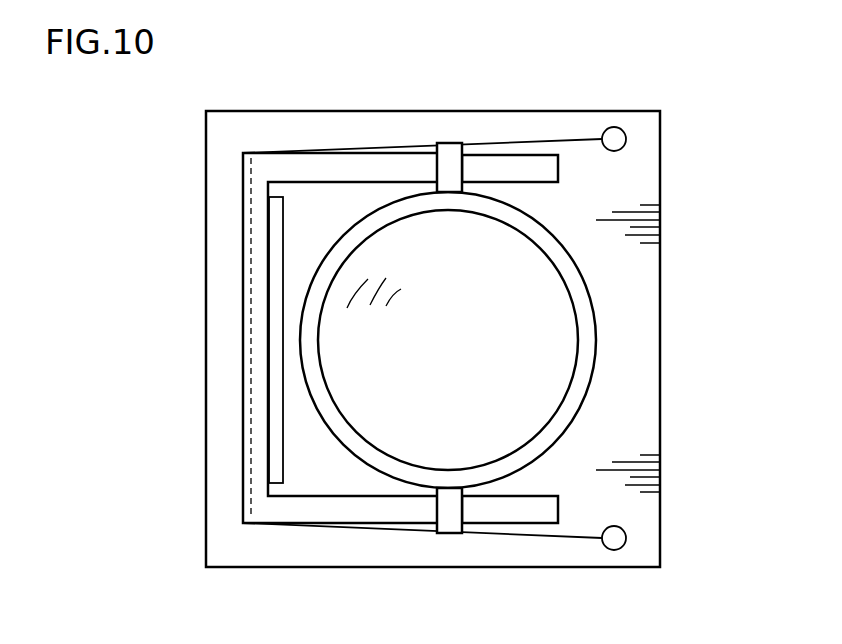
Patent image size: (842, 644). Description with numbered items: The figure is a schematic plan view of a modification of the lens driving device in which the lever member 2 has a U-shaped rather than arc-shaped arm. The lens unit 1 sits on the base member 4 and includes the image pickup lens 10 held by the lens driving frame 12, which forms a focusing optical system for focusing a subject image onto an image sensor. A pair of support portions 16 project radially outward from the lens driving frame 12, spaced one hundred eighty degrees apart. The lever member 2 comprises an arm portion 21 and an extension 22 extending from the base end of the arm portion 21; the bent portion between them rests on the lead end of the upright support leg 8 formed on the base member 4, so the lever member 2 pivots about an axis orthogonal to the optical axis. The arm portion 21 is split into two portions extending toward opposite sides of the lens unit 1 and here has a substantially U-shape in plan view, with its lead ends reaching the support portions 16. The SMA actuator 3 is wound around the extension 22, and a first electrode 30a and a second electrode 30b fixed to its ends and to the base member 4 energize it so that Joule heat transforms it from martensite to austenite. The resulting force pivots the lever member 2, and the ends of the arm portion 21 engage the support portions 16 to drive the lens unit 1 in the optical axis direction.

The lens unit 1 is at (529, 340).
The lever member 2 is at (273, 338).
The SMA actuator 3 is at (497, 145).
The base member 4 is at (240, 555).
The support leg 8 is at (277, 371).
The image pickup lens 10 is at (533, 364).
The lens driving frame 12 is at (595, 311).
The support portions 16 is at (450, 150).
The arm portion 21 is at (318, 183).
The extension 22 is at (243, 326).
The first electrode 30a is at (613, 127).
The second electrode 30b is at (614, 550).